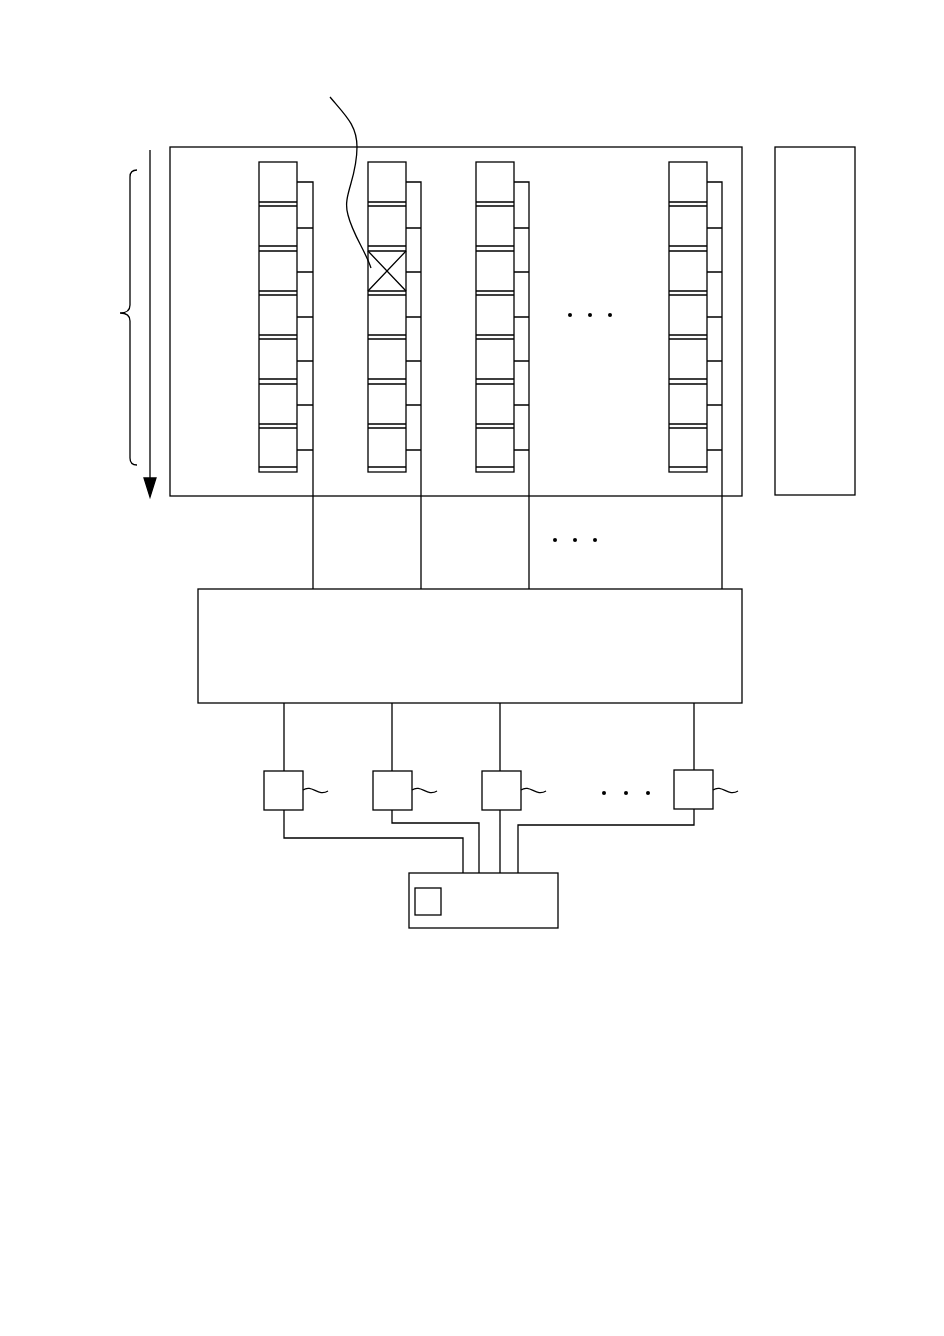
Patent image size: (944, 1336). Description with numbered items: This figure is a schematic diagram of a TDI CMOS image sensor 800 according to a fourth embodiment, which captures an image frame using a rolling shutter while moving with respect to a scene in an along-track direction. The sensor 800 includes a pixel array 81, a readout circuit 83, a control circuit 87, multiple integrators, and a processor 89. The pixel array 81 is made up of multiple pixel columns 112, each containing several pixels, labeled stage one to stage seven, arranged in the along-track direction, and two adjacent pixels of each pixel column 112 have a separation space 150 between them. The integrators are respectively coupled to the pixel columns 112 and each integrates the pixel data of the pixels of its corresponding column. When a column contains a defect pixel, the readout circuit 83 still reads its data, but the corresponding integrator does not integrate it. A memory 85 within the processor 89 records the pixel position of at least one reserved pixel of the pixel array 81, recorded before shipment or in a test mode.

The TDI CMOS image sensor 800 is at (184, 34).
The pixel array 81 is at (208, 147).
The pixel column 112 is at (689, 162).
The separation space 150 is at (666, 289).
The control circuit 87 is at (815, 496).
The readout circuit 83 is at (742, 652).
The memory 85 is at (413, 904).
The processor 89 is at (558, 903).